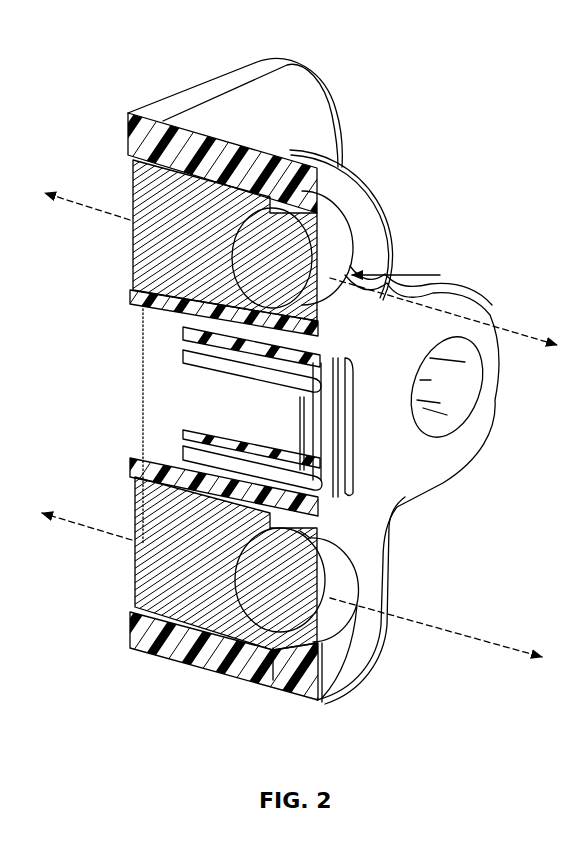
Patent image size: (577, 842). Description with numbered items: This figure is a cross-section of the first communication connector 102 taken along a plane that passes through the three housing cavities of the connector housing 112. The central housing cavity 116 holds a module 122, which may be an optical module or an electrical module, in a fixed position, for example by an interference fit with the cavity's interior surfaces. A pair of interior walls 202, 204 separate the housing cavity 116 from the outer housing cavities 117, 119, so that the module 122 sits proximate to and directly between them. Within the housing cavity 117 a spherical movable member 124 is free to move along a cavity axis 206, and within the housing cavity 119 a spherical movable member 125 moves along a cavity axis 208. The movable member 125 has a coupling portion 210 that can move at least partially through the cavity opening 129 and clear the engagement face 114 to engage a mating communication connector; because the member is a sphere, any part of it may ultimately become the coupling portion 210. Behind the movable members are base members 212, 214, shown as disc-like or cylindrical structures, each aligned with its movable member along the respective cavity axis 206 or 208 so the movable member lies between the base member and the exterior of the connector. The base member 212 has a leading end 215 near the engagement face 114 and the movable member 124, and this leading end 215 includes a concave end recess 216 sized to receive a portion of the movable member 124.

The first communication connector 102 is at (328, 33).
The connector housing 112 is at (234, 73).
The engagement face 114 is at (385, 342).
The housing cavity 116 is at (353, 427).
The housing cavity 117 is at (440, 275).
The housing cavity 119 is at (347, 613).
The module 122 is at (197, 430).
The movable member 124 is at (378, 264).
The movable member 125 is at (287, 612).
The cavity opening 129 is at (355, 578).
The interior wall 202 is at (172, 308).
The interior wall 204 is at (157, 450).
The cavity axis 206 is at (88, 208).
The cavity axis 208 is at (88, 527).
The coupling portion 210 is at (330, 577).
The base member 212 is at (150, 165).
The base member 214 is at (158, 578).
The leading end 215 is at (303, 167).
The end recess 216 is at (305, 255).